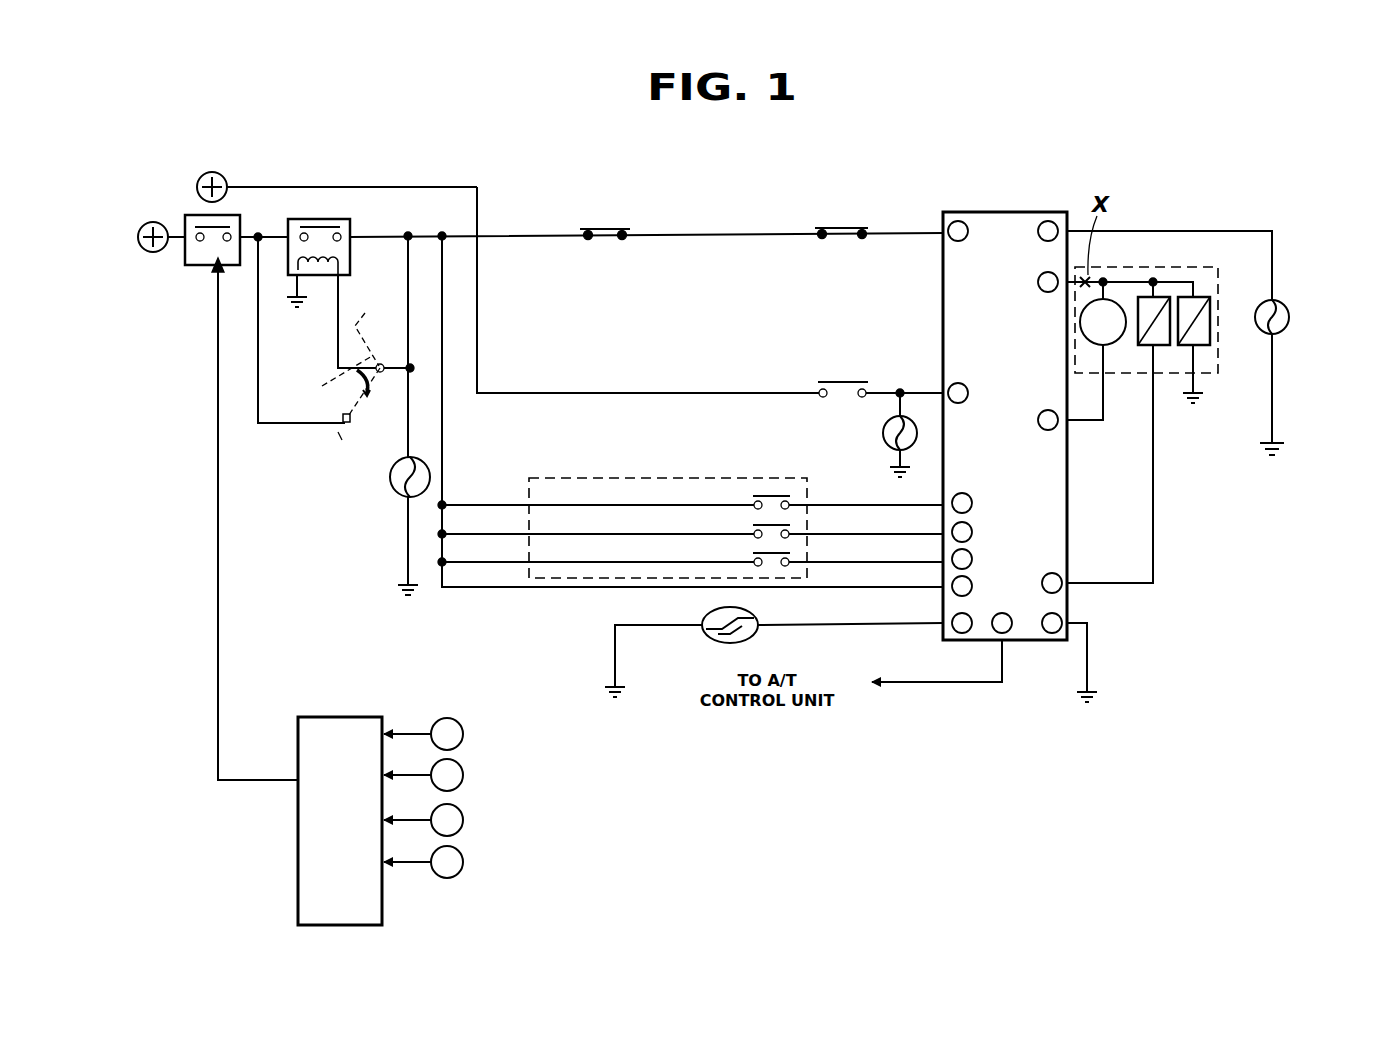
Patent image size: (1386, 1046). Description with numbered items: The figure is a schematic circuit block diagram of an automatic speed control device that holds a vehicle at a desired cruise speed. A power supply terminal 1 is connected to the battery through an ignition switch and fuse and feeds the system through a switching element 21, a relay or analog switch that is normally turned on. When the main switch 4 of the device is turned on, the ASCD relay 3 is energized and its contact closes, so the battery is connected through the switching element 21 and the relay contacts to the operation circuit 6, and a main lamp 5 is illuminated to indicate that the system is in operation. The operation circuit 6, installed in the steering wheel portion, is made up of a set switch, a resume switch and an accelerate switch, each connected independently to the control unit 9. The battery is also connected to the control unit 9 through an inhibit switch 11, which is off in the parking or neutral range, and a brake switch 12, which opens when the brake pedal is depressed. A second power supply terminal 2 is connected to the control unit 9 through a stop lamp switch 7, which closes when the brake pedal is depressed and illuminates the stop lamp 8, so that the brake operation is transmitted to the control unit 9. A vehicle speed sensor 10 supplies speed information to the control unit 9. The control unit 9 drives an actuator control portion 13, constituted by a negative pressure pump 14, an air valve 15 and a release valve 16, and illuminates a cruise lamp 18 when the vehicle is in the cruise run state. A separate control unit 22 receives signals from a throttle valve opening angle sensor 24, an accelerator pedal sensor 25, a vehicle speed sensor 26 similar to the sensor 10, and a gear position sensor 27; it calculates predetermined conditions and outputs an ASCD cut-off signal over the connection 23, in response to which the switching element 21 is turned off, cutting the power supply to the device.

The power supply terminal 1 is at (149, 253).
The power supply terminal 2 is at (226, 178).
The ASCD relay 3 is at (347, 233).
The main switch 4 is at (357, 369).
The indicator lamp 5 is at (390, 484).
The operation circuit 6 is at (634, 477).
The stop lamp switch 7 is at (829, 380).
The stop lamp 8 is at (883, 435).
The control unit 9 is at (1005, 212).
The vehicle speed sensor 10 is at (760, 616).
The inhibit switch 11 is at (606, 243).
The brake switch 12 is at (843, 242).
The actuator control portion 13 is at (1179, 266).
The negative pressure pump 14 is at (1110, 346).
The air valve 15 is at (1147, 350).
The release valve 16 is at (1188, 350).
The cruise lamp 18 is at (1284, 302).
The switching element 21 is at (203, 266).
The control unit 22 is at (346, 717).
The signal line 23 is at (215, 747).
The throttle valve opening angle sensor 24 is at (463, 735).
The accelerator pedal sensor 25 is at (463, 776).
The vehicle speed sensor 26 is at (463, 821).
The gear position sensor 27 is at (463, 863).